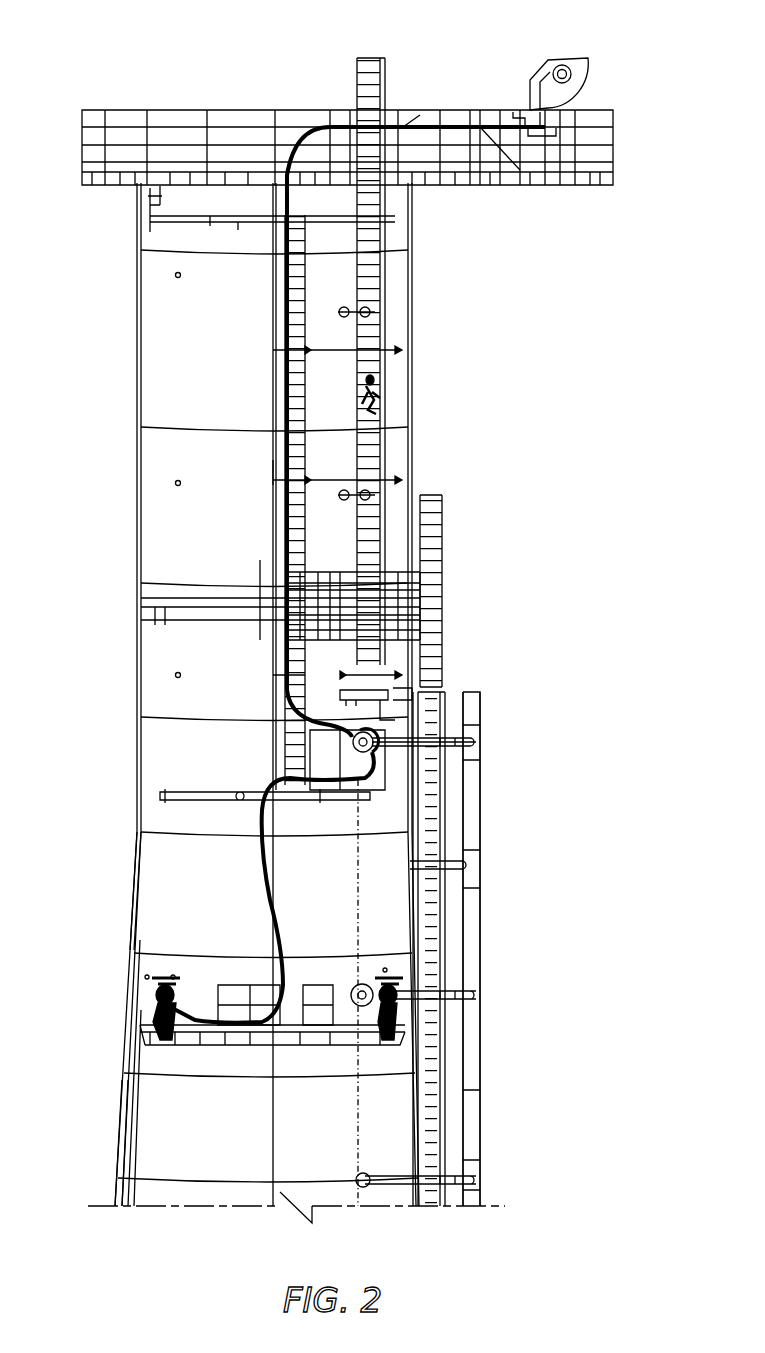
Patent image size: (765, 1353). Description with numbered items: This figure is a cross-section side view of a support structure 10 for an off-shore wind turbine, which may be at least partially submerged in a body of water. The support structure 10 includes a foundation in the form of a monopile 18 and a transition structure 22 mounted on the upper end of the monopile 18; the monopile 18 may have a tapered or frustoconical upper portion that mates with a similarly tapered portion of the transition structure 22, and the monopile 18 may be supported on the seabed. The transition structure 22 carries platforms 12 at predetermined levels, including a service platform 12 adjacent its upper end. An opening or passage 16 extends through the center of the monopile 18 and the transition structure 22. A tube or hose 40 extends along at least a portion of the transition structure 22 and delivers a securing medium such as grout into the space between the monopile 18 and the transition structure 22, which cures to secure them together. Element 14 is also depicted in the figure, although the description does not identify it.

The support structure 10 is at (563, 35).
The platforms 12 is at (612, 184).
The work platform 14 is at (145, 992).
The opening or passage 16 is at (141, 352).
The foundation (monopile) 18 is at (150, 1138).
The transition structure 22 is at (132, 892).
The tube or hose 40 is at (471, 949).